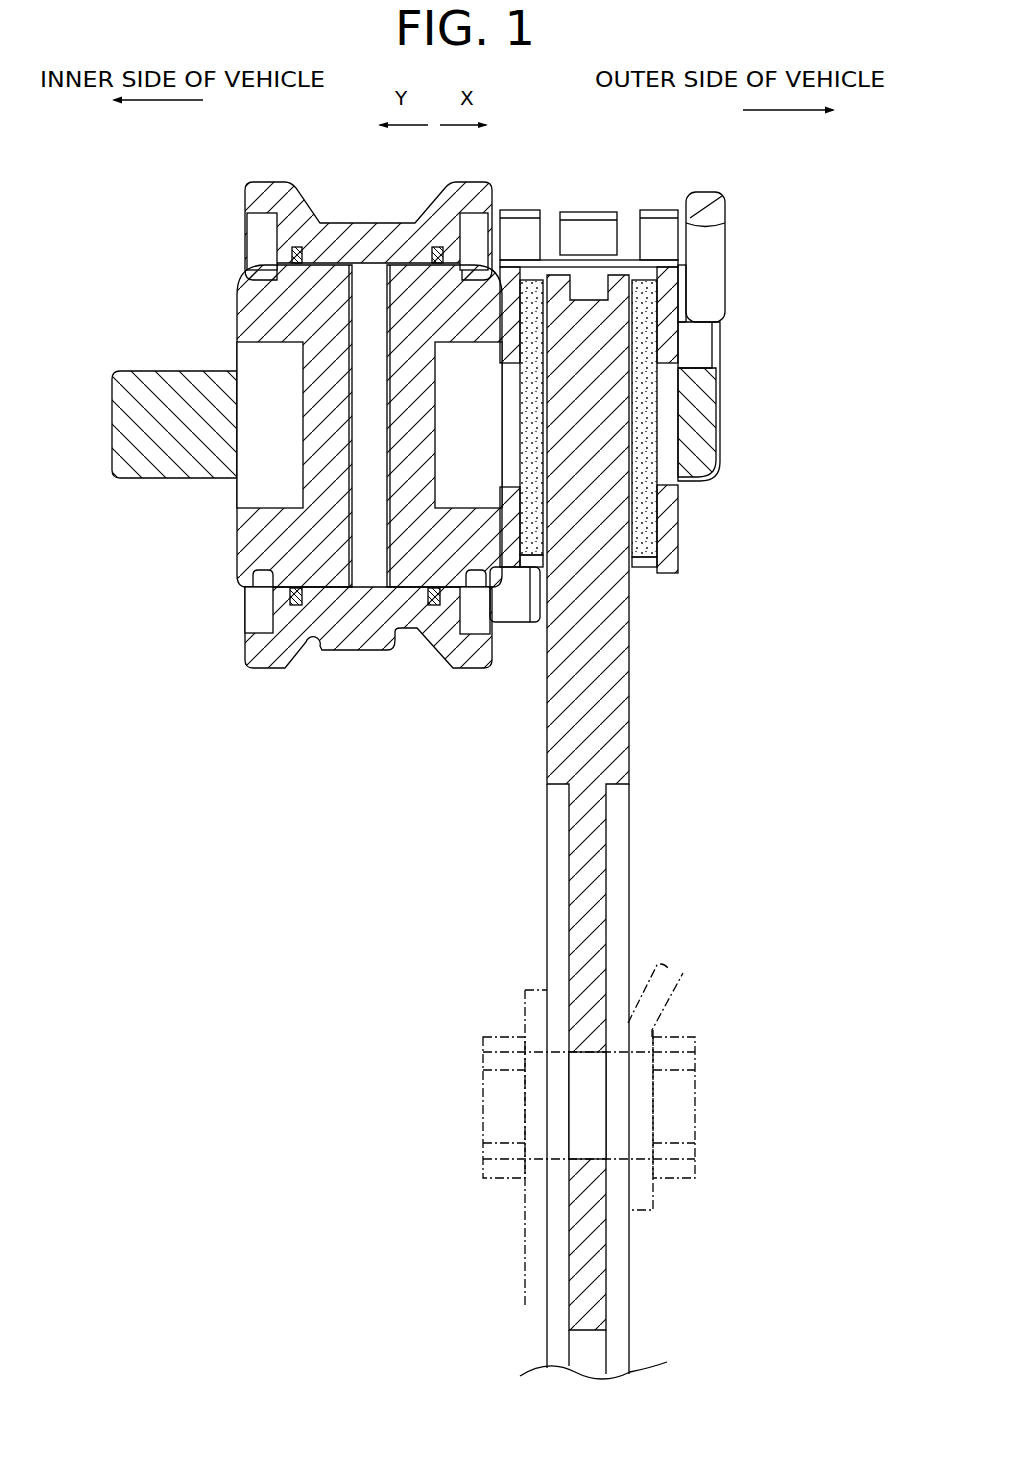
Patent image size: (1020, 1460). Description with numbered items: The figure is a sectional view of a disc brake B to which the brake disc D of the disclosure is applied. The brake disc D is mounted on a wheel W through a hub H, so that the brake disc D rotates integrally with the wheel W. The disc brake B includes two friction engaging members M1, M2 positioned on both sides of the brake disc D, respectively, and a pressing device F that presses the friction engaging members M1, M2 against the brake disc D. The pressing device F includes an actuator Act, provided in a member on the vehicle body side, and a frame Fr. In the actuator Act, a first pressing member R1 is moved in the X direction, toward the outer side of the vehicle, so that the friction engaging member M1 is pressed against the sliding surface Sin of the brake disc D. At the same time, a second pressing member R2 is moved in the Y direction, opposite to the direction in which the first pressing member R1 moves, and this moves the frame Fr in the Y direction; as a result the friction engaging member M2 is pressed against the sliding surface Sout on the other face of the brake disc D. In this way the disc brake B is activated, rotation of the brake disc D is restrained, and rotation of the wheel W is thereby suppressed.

The disc brake B is at (322, 433).
The actuator Act is at (342, 211).
The pressing device F is at (211, 288).
The frame Fr is at (137, 385).
The friction engaging member M1 is at (531, 242).
The friction engaging member M2 is at (656, 243).
The sliding surface Sin is at (543, 500).
The sliding surface Sout is at (632, 470).
The first pressing member R1 is at (415, 575).
The second pressing member R2 is at (318, 575).
The brake disc D is at (707, 861).
The wheel W is at (657, 995).
The hub H is at (528, 1213).